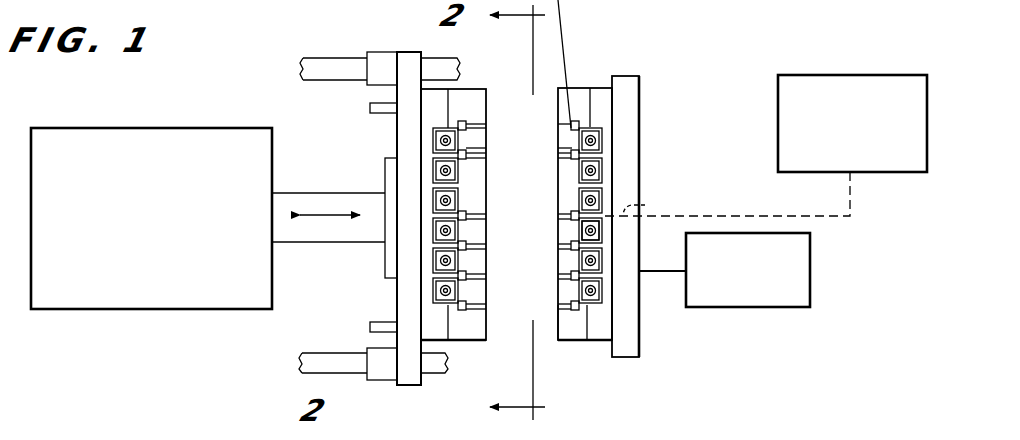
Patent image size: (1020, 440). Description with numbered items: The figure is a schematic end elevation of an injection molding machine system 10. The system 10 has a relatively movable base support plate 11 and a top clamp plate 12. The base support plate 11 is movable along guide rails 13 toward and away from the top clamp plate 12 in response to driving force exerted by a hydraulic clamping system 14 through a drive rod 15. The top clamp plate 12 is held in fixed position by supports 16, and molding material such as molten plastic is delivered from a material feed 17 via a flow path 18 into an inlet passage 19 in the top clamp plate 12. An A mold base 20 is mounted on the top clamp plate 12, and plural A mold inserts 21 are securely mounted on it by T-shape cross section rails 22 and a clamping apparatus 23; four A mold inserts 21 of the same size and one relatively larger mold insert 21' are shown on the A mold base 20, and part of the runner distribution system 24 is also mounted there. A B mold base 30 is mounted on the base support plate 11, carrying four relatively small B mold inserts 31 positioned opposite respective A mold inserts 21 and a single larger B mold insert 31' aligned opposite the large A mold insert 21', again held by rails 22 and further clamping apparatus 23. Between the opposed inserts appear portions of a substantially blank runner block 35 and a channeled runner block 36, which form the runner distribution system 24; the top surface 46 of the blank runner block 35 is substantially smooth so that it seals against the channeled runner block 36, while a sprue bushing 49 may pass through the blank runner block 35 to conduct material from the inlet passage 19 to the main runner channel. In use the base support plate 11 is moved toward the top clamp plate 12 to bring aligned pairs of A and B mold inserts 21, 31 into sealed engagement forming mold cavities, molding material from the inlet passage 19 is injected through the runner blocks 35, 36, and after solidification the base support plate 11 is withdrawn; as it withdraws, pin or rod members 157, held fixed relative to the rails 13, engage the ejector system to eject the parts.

The injection molding machine system 10 is at (305, 47).
The base support plate 11 is at (409, 58).
The top clamp plate 12 is at (624, 80).
The guide rails 13 is at (350, 58).
The hydraulic clamping system 14 is at (183, 128).
The drive rod 15 is at (330, 193).
The supports 16 is at (679, 281).
The material feed 17 is at (778, 100).
The flow path 18 is at (738, 216).
The inlet passage 19 is at (651, 205).
The A mold base 20 is at (592, 88).
The A mold inserts 21 is at (557, 79).
The larger A mold insert 21' is at (553, 239).
The T-shape cross section rails 22 is at (485, 153).
The clamping apparatus 23 is at (432, 136).
The runner distribution system 24 is at (557, 322).
The B mold base 30 is at (440, 101).
The B mold inserts 31 is at (487, 131).
The larger B mold insert 31' is at (488, 236).
The blank runner block 35 is at (565, 272).
The channeled runner block 36 is at (482, 277).
The top surface 46 is at (556, 342).
The sprue bushing 49 is at (595, 212).
The pin or rod members 157 is at (376, 108).